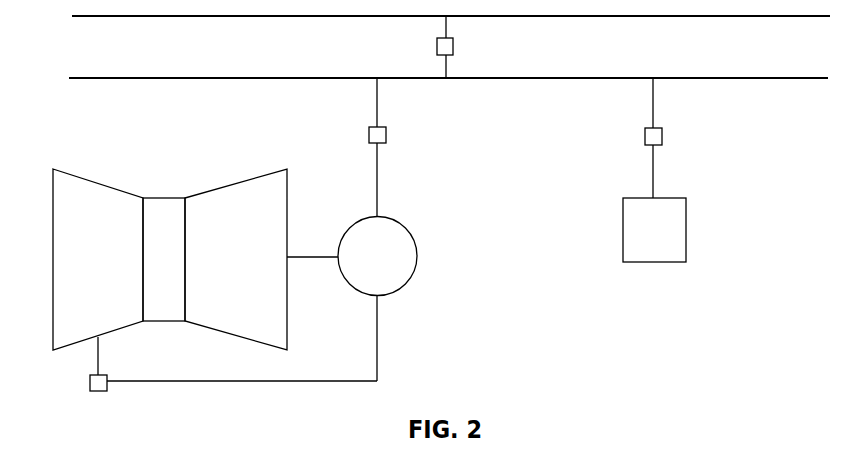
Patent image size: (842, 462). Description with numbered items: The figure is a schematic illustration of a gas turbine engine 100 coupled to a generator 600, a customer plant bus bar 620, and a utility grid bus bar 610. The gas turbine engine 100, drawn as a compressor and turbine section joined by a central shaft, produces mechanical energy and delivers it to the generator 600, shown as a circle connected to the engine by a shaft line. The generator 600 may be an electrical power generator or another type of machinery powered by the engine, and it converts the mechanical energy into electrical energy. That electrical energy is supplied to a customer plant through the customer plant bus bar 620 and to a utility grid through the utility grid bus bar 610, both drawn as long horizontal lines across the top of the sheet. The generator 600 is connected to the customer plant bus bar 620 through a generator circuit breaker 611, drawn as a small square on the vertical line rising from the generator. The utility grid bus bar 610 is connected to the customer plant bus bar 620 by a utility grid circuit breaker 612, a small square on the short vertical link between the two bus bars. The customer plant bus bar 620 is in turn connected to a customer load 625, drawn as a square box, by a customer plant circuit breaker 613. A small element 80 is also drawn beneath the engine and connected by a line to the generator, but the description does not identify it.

The utility grid bus bar 610 is at (140, 16).
The customer plant bus bar 620 is at (138, 79).
The utility grid circuit breaker 612 is at (436, 46).
The generator circuit breaker 611 is at (368, 134).
The customer plant circuit breaker 613 is at (645, 137).
The customer load 625 is at (676, 230).
The generator 600 is at (397, 273).
The gas turbine engine 100 is at (151, 172).
The sensor 80 is at (90, 379).